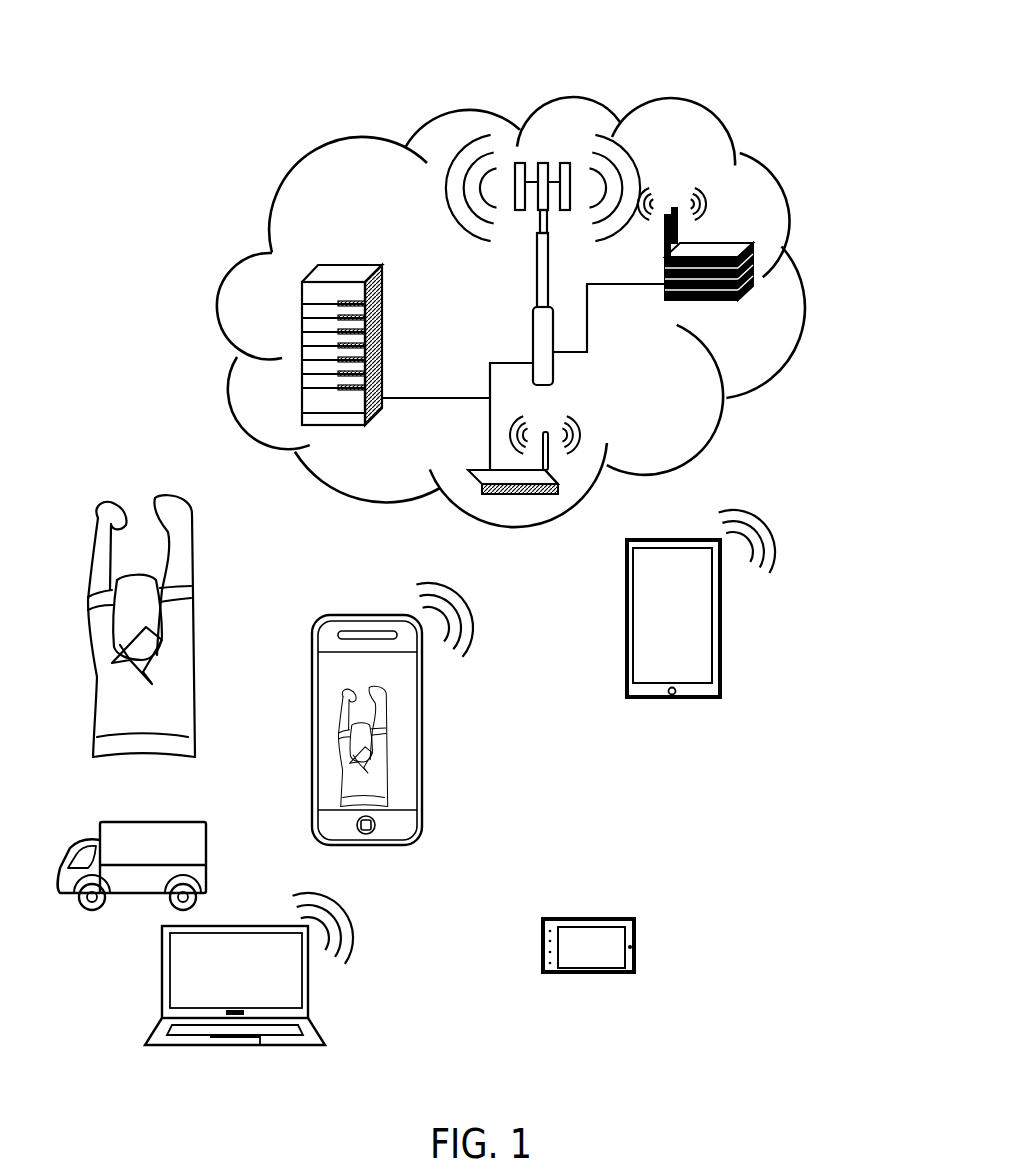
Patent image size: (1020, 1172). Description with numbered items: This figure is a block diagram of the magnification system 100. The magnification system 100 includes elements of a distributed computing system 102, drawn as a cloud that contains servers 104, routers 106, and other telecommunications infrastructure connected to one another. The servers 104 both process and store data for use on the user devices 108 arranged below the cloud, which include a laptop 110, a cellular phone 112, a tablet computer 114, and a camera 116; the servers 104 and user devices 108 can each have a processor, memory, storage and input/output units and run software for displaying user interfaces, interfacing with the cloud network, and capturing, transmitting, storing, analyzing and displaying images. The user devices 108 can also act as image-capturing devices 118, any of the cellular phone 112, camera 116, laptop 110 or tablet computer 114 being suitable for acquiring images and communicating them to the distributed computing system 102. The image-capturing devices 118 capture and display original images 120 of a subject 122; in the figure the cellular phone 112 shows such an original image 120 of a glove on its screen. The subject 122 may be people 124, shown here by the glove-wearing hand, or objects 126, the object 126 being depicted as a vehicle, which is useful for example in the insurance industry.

The magnification system 100 is at (130, 51).
The distributed computing system 102 is at (206, 153).
The servers 104 is at (337, 272).
The routers 106 is at (720, 250).
The user devices 108 is at (808, 480).
The laptop 110 is at (292, 985).
The cellular phone 112 is at (437, 756).
The tablet computer 114 is at (690, 664).
The camera 116 is at (612, 958).
The image-capturing devices 118 is at (464, 793).
The original images 120 is at (363, 785).
The subject 122 is at (220, 764).
The people 124 is at (170, 638).
The object 126 is at (162, 847).